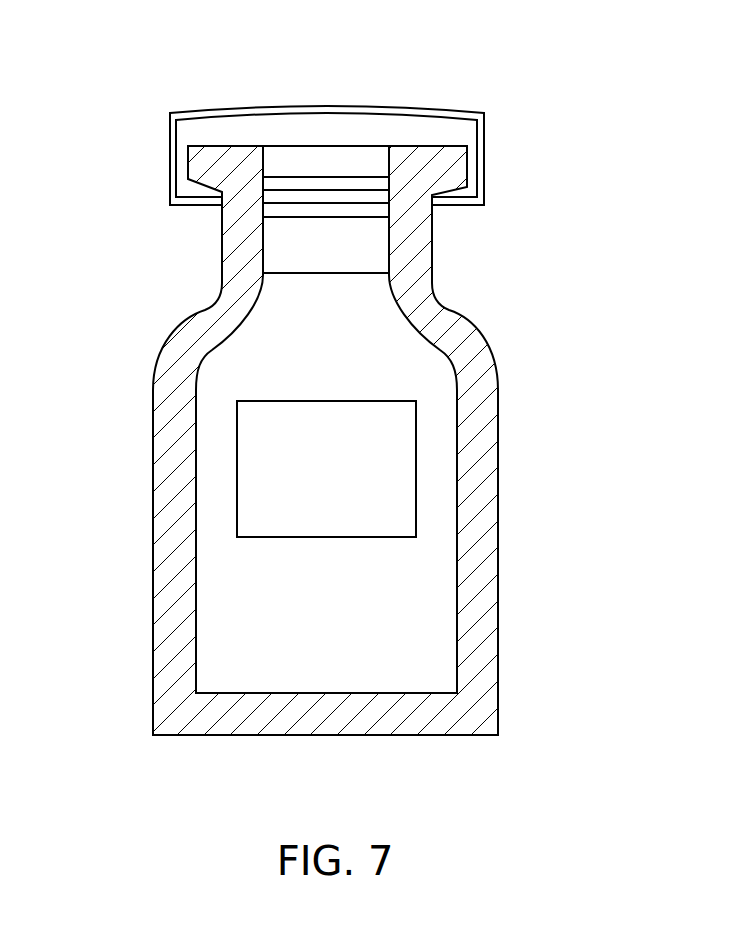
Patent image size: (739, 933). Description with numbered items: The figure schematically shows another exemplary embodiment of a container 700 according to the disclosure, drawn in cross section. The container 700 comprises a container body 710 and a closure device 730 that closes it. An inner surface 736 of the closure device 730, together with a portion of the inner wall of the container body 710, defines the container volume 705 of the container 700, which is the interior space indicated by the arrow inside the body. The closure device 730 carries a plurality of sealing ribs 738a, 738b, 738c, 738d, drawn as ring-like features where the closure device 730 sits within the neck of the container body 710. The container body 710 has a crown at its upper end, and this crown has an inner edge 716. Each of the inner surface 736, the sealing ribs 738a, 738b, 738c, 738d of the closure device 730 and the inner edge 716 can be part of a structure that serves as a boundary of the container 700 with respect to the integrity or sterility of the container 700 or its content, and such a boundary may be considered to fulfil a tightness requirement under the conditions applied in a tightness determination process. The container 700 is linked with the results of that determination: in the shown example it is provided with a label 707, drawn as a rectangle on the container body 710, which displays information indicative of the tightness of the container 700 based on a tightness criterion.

The container 700 is at (129, 42).
The container volume 705 is at (248, 652).
The label 707 is at (237, 475).
The container body 710 is at (160, 645).
The inner edge 716 is at (398, 210).
The closure device 730 is at (318, 106).
The inner surface 736 is at (355, 273).
The sealing rib 738a is at (365, 217).
The sealing rib 738b is at (376, 203).
The sealing rib 738c is at (376, 190).
The sealing rib 738d is at (376, 177).